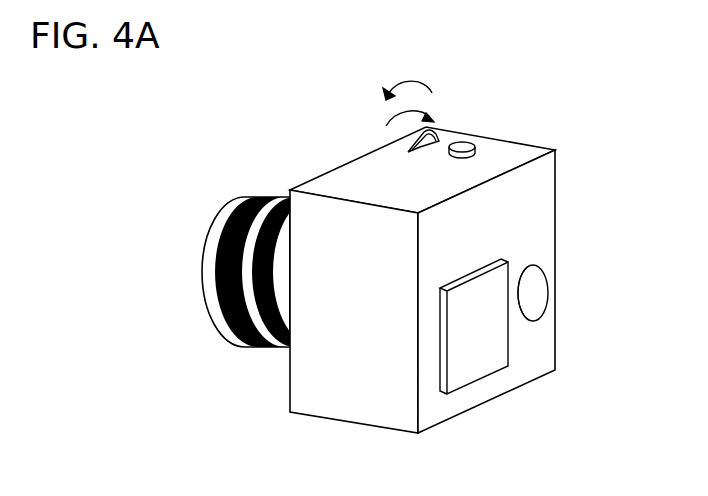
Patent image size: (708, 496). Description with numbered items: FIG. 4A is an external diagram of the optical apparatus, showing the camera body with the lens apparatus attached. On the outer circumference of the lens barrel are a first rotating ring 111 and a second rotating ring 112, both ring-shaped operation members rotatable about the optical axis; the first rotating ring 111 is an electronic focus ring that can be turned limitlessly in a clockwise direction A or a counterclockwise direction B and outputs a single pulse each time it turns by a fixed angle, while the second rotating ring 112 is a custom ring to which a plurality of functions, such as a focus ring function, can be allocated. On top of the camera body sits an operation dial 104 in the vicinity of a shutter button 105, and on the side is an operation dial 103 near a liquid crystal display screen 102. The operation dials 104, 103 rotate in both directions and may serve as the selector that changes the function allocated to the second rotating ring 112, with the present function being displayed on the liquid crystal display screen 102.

The liquid crystal display screen 102 is at (473, 350).
The operation dial 103 is at (532, 288).
The operation dial 104 is at (432, 142).
The shutter button 105 is at (463, 141).
The first rotating ring 111 is at (274, 348).
The second rotating ring 112 is at (240, 344).